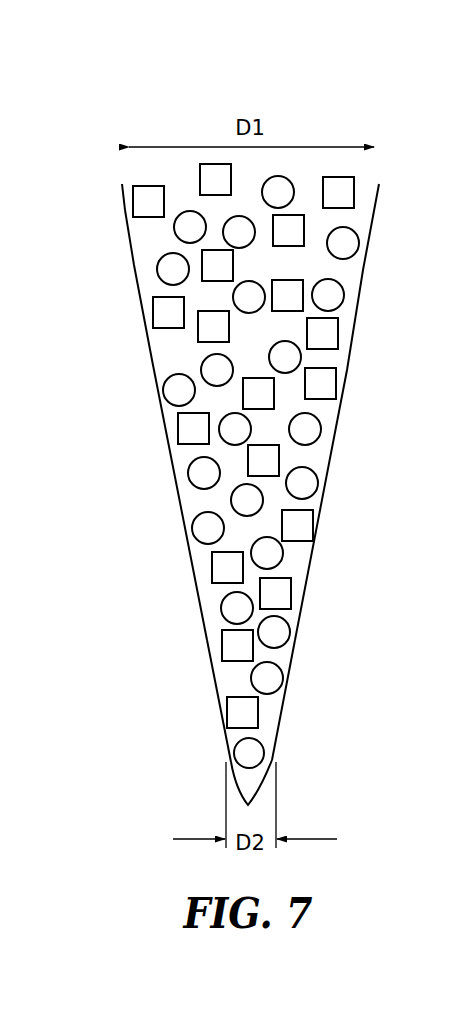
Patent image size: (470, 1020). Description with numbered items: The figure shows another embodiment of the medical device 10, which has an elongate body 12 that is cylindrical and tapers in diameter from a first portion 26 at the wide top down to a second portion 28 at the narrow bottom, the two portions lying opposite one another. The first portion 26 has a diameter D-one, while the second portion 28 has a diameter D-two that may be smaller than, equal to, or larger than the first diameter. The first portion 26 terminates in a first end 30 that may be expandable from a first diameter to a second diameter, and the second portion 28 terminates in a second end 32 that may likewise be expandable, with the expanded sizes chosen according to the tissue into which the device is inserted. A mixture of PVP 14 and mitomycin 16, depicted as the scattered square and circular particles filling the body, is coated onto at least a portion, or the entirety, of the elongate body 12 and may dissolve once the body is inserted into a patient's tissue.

The medical device 10 is at (369, 636).
The elongate body 12 is at (129, 273).
The PVP 14 is at (199, 473).
The mitomycin 16 is at (177, 391).
The first portion 26 is at (404, 269).
The second portion 28 is at (186, 688).
The first end 30 is at (122, 205).
The second end 32 is at (246, 805).